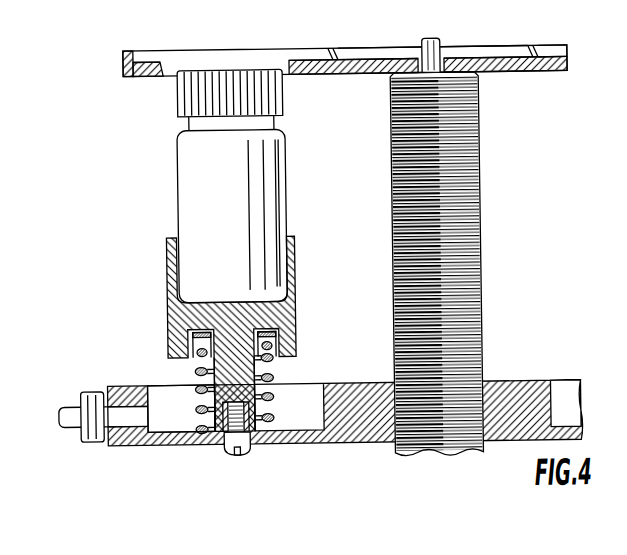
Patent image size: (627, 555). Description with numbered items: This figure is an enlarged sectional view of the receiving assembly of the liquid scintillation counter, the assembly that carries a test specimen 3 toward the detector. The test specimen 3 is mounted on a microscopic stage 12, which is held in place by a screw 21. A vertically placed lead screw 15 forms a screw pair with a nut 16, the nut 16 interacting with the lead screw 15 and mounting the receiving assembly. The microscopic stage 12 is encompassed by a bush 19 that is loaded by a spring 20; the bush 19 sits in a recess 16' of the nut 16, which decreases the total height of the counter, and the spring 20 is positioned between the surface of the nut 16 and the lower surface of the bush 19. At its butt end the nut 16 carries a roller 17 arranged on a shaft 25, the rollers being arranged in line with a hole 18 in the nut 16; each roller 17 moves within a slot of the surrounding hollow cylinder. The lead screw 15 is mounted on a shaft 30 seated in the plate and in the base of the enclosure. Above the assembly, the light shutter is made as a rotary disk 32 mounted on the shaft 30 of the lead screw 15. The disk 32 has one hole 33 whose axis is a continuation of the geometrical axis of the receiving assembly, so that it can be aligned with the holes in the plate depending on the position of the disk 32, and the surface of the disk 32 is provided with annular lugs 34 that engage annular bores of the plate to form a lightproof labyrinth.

The test specimen 3 is at (287, 140).
The microscopic stage 12 is at (289, 317).
The lead screw 15 is at (476, 136).
The nut 16 is at (346, 438).
The recess of the nut 16' is at (163, 388).
The roller 17 is at (78, 432).
The hole in the nut 18 is at (211, 444).
The bush 19 is at (169, 345).
The spring 20 is at (269, 372).
The screw 21 is at (240, 447).
The shaft 25 is at (63, 404).
The shaft 30 is at (446, 45).
The rotary disk 32 is at (129, 65).
The hole of the disk 33 is at (293, 66).
The annular lug 34 is at (534, 53).